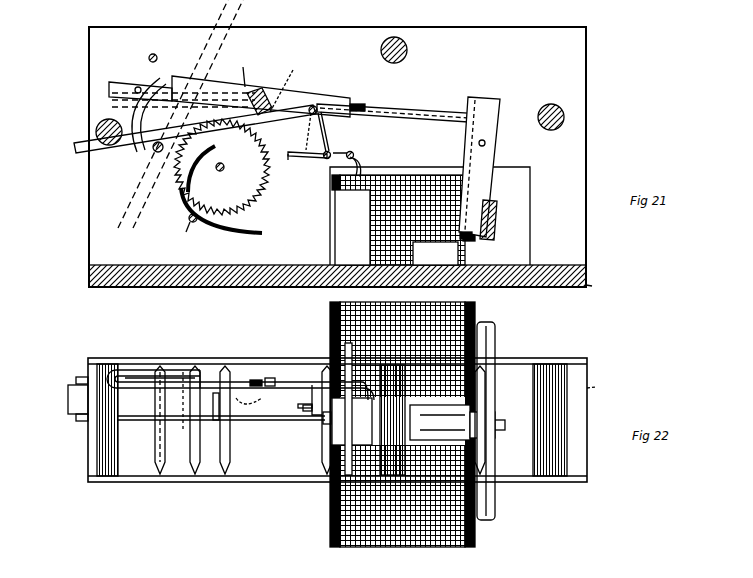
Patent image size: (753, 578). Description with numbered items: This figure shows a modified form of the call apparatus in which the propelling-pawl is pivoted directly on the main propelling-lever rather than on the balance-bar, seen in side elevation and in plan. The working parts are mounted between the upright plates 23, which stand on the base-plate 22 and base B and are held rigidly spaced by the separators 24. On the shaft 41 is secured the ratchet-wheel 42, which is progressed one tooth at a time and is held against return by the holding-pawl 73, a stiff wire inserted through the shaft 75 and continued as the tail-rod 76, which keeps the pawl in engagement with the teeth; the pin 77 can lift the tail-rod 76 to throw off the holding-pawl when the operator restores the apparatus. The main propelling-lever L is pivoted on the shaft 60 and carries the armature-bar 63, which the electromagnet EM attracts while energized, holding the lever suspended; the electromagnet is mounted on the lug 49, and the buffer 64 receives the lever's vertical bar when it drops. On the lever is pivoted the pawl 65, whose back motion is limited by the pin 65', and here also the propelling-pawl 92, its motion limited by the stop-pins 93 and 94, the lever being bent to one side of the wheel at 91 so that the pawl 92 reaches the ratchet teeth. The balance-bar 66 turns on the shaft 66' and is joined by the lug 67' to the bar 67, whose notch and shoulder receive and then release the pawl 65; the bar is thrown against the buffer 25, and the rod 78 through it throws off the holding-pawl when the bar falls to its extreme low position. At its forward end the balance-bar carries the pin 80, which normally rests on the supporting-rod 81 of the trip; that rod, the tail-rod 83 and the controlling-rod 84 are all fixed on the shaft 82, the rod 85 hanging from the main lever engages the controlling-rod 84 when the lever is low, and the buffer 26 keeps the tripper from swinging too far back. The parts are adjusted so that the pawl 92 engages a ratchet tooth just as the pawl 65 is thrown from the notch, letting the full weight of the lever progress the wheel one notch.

In FIG. 21, the base-plate 22 is at (586, 270).
In FIG. 22, the base-plate 22 is at (588, 367).
In FIG. 21, the upright plate 23 is at (350, 157).
In FIG. 22, the upright plate 23 is at (338, 433).
In FIG. 21, the separator 24 is at (408, 52).
In FIG. 22, the separator 24 is at (97, 460).
In FIG. 21, the buffer 25 is at (143, 58).
In FIG. 21, the buffer 26 is at (354, 153).
In FIG. 22, the buffer 26 is at (330, 503).
In FIG. 21, the shaft 41 is at (225, 167).
In FIG. 22, the shaft 41 is at (232, 445).
In FIG. 21, the ratchet-wheel 42 is at (222, 167).
In FIG. 22, the ratchet-wheel 42 is at (249, 403).
In FIG. 21, the lug 49 is at (352, 227).
In FIG. 22, the lug 49 is at (327, 462).
In FIG. 21, the shaft 60 is at (486, 143).
In FIG. 22, the shaft 60 is at (488, 397).
In FIG. 21, the armature-bar 63 is at (498, 220).
In FIG. 22, the armature-bar 63 is at (496, 330).
In FIG. 21, the buffer 64 is at (435, 253).
In FIG. 22, the buffer 64 is at (440, 422).
In FIG. 21, the pawl 65 is at (229, 110).
In FIG. 22, the pawl 65 is at (240, 371).
In FIG. 21, the pin 65' is at (101, 97).
In FIG. 22, the pin 65' is at (160, 393).
In FIG. 21, the balance-bar 66 is at (180, 140).
In FIG. 22, the balance-bar 66 is at (162, 420).
In FIG. 21, the shaft 66' is at (161, 167).
In FIG. 22, the shaft 66' is at (144, 417).
In FIG. 22, the bar 67 is at (67, 394).
In FIG. 22, the lug 67' is at (54, 399).
In FIG. 21, the holding-pawl 73 is at (182, 213).
In FIG. 22, the holding-pawl 73 is at (175, 410).
In FIG. 21, the shaft 75 is at (187, 235).
In FIG. 22, the shaft 75 is at (183, 461).
In FIG. 21, the tail-rod 76 is at (221, 218).
In FIG. 22, the pin 77 is at (209, 406).
In FIG. 21, the rod 78 is at (203, 171).
In FIG. 21, the pin 80 is at (325, 96).
In FIG. 22, the pin 80 is at (300, 411).
In FIG. 21, the supporting-rod 81 is at (333, 132).
In FIG. 22, the supporting-rod 81 is at (300, 433).
In FIG. 21, the shaft 82 is at (300, 162).
In FIG. 22, the shaft 82 is at (336, 470).
In FIG. 21, the tail-rod 83 is at (362, 162).
In FIG. 22, the tail-rod 83 is at (351, 421).
In FIG. 21, the controlling-rod 84 is at (307, 150).
In FIG. 22, the controlling-rod 84 is at (298, 406).
In FIG. 21, the rod 85 is at (302, 115).
In FIG. 22, the rod 85 is at (307, 400).
In FIG. 21, the bent portion of main lever 91 is at (363, 106).
In FIG. 22, the bent portion of main lever 91 is at (343, 352).
In FIG. 21, the propelling-pawl 92 is at (263, 90).
In FIG. 22, the propelling-pawl 92 is at (256, 380).
In FIG. 21, the stop-pin 93 is at (287, 83).
In FIG. 22, the stop-pin 93 is at (274, 366).
In FIG. 21, the stop-pin 94 is at (235, 71).
In FIG. 22, the stop-pin 94 is at (233, 420).
In FIG. 21, the main propelling lever L is at (392, 107).
In FIG. 22, the main propelling lever L is at (292, 368).
In FIG. 21, the base B is at (593, 289).
In FIG. 22, the base B is at (596, 388).
In FIG. 21, the electromagnet EM is at (403, 220).
In FIG. 22, the electromagnet EM is at (478, 543).